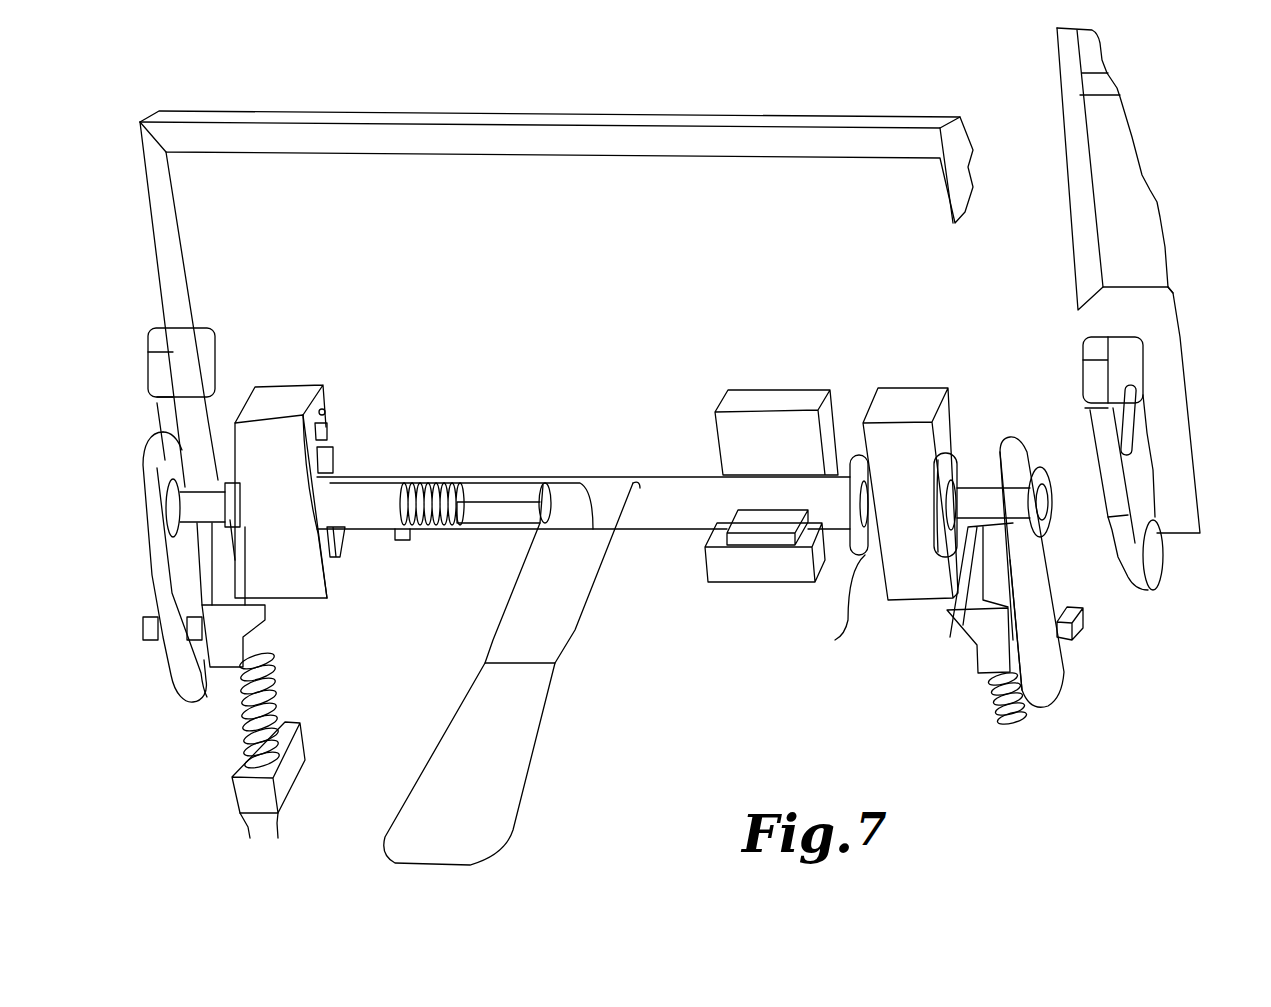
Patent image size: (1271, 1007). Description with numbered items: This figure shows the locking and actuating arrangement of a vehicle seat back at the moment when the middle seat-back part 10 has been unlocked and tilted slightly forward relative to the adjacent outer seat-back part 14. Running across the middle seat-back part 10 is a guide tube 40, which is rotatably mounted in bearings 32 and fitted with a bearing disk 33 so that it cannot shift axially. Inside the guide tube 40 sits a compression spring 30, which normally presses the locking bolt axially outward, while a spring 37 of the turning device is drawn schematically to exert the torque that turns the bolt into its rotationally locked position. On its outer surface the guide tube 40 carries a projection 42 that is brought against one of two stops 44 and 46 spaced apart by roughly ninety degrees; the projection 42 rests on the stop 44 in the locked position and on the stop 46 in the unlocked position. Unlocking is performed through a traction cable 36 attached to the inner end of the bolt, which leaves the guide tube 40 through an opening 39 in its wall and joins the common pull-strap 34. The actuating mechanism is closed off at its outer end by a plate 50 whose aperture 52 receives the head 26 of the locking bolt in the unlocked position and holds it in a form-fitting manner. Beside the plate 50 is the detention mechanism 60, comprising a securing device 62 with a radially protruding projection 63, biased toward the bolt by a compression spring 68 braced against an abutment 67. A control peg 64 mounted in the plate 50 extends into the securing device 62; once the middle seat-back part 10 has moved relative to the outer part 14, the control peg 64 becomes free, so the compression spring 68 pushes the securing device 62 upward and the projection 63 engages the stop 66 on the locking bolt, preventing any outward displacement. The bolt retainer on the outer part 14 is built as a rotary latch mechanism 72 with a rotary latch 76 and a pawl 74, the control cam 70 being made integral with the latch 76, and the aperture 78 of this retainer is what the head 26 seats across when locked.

The middle seat-back part 10 is at (590, 257).
The outer seat-back part 14 is at (1136, 232).
The pawl 74 is at (1203, 281).
The head 26 is at (1043, 505).
The compression spring 30 is at (422, 492).
The bearing 32 is at (282, 400).
The bearing disk 33 is at (337, 460).
The pull-strap 34 is at (513, 810).
The traction cable 36 is at (500, 502).
The spring 37 is at (334, 425).
The opening 39 is at (633, 483).
The guide tube 40 is at (683, 476).
The projection 42 is at (772, 515).
The stop 44 is at (775, 405).
The stop 46 is at (765, 573).
The plate 50 is at (1017, 450).
The aperture 52 is at (1048, 520).
The detention mechanism 60 is at (918, 627).
The securing device 62 is at (243, 620).
The projection 63 is at (985, 578).
The control peg 64 is at (1073, 632).
The stop 66 is at (968, 470).
The abutment 67 is at (300, 757).
The compression spring 68 is at (272, 688).
The control body or cam 70 is at (1155, 568).
The rotary latch mechanism 72 is at (1169, 441).
The rotary latch 76 is at (1137, 495).
The aperture 78 is at (1123, 418).